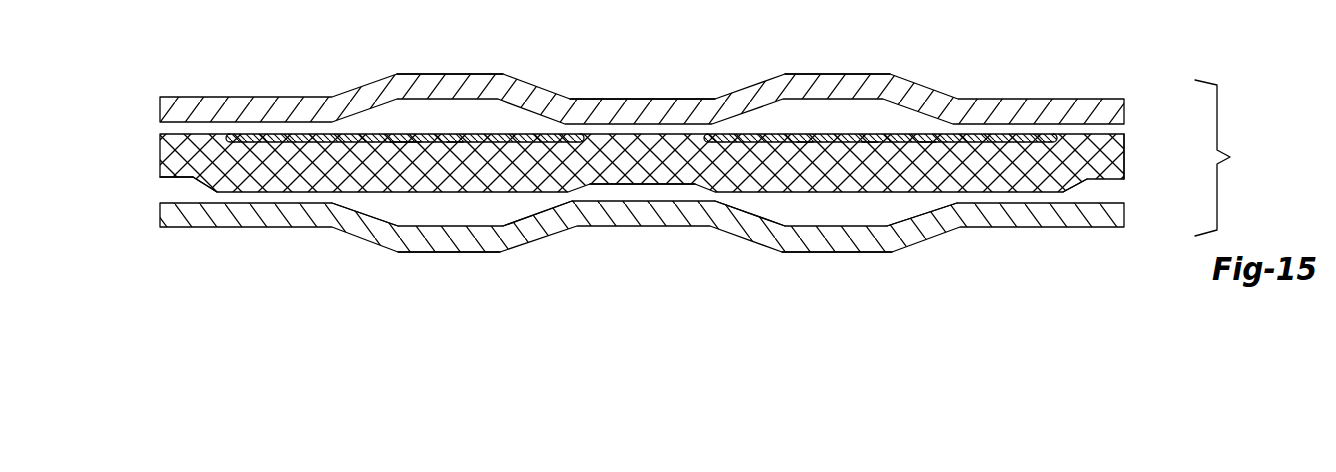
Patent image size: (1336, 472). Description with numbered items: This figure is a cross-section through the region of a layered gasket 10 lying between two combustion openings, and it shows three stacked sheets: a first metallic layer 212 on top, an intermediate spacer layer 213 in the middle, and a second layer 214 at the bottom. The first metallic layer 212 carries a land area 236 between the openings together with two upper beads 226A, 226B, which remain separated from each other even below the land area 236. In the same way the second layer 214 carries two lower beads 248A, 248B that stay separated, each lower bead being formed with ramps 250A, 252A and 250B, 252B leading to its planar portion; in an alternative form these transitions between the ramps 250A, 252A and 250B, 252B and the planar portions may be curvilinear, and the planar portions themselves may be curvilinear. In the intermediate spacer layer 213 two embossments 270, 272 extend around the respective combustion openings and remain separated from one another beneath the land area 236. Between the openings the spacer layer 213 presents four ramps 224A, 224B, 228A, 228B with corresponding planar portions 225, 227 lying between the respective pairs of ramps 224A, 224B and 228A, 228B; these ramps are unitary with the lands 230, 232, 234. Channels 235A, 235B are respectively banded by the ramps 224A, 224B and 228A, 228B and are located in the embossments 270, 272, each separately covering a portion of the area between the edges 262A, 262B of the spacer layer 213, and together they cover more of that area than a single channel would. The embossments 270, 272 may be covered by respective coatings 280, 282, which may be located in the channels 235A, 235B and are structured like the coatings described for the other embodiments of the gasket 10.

The laminate assembly 10 is at (1225, 158).
The first metallic layer 212 is at (160, 112).
The intermediate spacer layer 213 is at (171, 178).
The second layer 214 is at (170, 222).
The ramp 224A is at (230, 140).
The ramp 224B is at (563, 138).
The planar portion 225 is at (455, 146).
The upper bead 226A is at (452, 75).
The upper bead 226B is at (838, 75).
The planar portion 227 is at (870, 146).
The ramp 228A is at (720, 138).
The ramp 228B is at (1050, 140).
The land 230 is at (181, 178).
The land 232 is at (641, 185).
The land 234 is at (1110, 180).
The channel 235A is at (412, 147).
The channel 235B is at (805, 146).
The land area 236 is at (645, 99).
The lower bead 248A is at (446, 253).
The lower bead 248B is at (835, 253).
The ramp 250A is at (360, 240).
The ramp 250B is at (748, 240).
The ramp 252A is at (537, 240).
The ramp 252B is at (925, 240).
The edge 262A is at (160, 158).
The edge 262B is at (1125, 157).
The embossment 270 is at (345, 157).
The embossment 272 is at (962, 158).
The coating 280 is at (398, 136).
The coating 282 is at (928, 136).